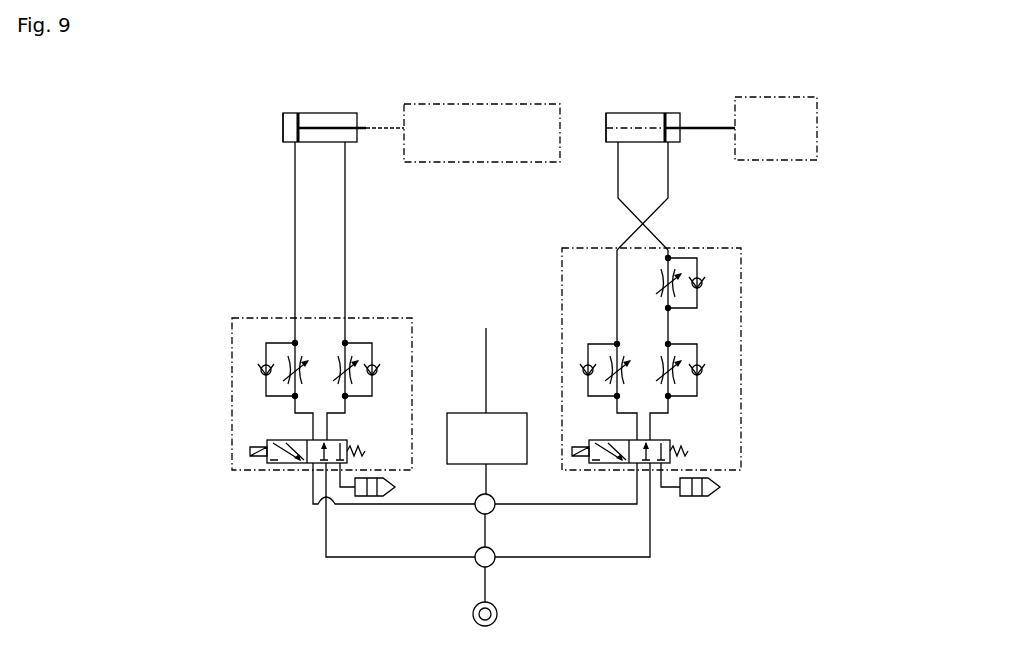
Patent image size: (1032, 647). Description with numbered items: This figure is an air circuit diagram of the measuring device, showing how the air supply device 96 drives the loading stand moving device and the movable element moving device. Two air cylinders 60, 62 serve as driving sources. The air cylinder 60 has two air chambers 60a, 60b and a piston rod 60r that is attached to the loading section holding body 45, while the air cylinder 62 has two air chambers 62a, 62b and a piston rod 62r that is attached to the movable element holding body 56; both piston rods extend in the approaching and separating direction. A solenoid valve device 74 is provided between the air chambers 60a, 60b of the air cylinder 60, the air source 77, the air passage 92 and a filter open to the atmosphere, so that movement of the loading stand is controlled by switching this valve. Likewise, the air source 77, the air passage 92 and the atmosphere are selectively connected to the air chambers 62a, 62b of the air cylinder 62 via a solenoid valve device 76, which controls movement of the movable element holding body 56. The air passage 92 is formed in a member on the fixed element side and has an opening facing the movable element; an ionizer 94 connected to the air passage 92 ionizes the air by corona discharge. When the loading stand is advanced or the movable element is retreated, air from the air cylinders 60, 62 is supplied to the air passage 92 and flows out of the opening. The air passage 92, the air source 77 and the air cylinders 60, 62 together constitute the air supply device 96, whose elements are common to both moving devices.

The air cylinder 60 is at (306, 107).
The air chamber 60a is at (289, 122).
The air chamber 60b is at (327, 145).
The piston rod 60r is at (353, 122).
The loading section holding body 45 is at (448, 163).
The air cylinder 62 is at (629, 107).
The air chamber 62a is at (612, 120).
The air chamber 62b is at (681, 118).
The piston rod 62r is at (695, 134).
The movable element holding body 56 is at (770, 161).
The solenoid valve device 74 is at (244, 305).
The solenoid valve device 76 is at (758, 307).
The air passage 92 is at (485, 360).
The ionizer 94 is at (505, 412).
The air supply device 96 is at (405, 569).
The air source 77 is at (497, 610).